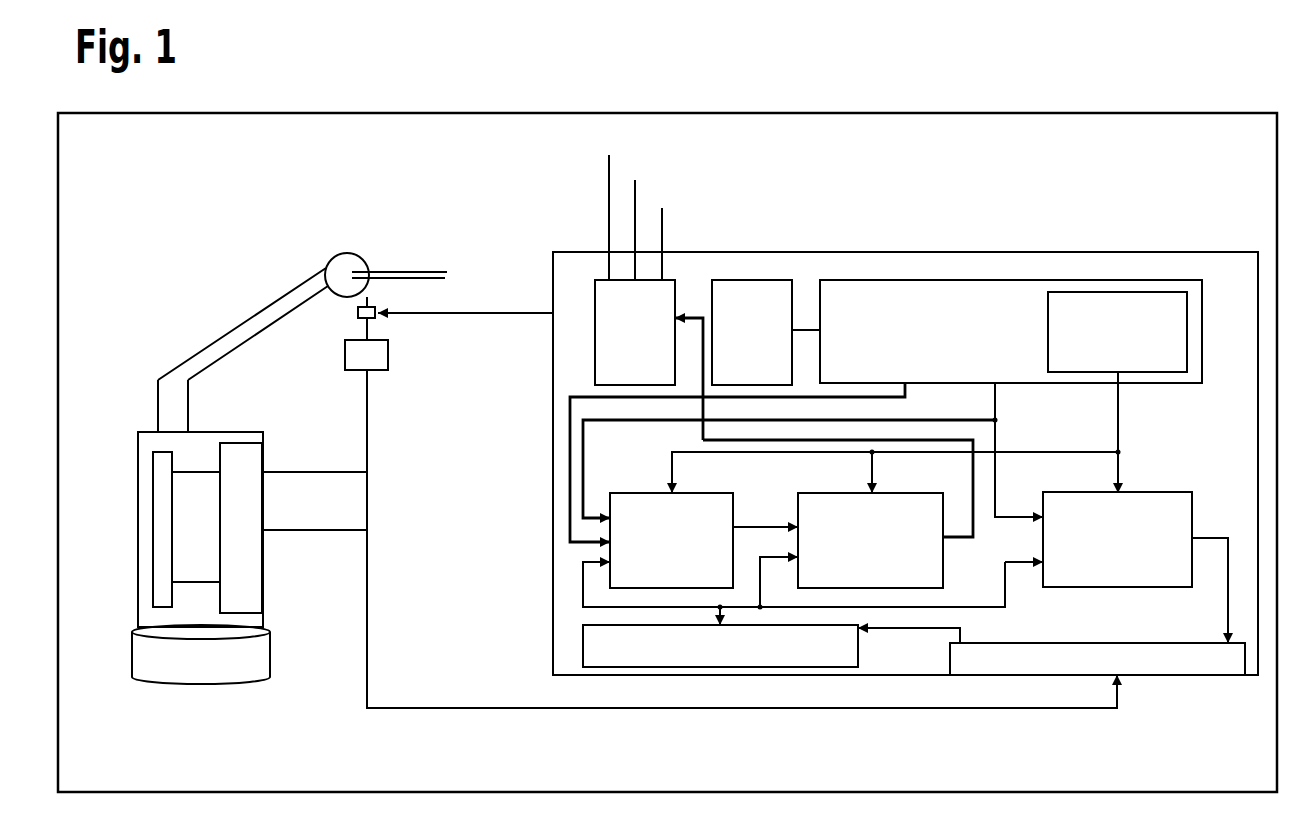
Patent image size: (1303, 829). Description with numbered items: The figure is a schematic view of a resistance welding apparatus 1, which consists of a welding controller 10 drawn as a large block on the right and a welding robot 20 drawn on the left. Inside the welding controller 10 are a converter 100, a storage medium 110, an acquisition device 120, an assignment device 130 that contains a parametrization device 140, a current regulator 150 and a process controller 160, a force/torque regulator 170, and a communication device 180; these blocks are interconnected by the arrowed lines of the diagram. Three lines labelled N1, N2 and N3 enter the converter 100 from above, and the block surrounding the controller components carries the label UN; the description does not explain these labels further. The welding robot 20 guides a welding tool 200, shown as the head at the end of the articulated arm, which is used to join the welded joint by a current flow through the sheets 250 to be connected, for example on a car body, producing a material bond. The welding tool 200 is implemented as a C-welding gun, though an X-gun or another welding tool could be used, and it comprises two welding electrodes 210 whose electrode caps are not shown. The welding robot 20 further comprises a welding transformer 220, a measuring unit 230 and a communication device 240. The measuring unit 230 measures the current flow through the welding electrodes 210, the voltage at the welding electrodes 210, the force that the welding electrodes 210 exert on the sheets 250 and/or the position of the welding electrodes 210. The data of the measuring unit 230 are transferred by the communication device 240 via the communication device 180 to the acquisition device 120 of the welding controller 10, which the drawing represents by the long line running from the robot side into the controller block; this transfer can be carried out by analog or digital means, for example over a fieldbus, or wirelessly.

The resistance welding apparatus 1 is at (1202, 114).
The welding controller 10 is at (1018, 252).
The welding robot 20 is at (286, 435).
The converter 100 is at (595, 300).
The storage medium 110 is at (753, 280).
The acquisition device 120 is at (773, 667).
The assignment device 130 is at (878, 280).
The parametrization device 140 is at (1120, 292).
The current regulator 150 is at (905, 588).
The process controller 160 is at (668, 588).
The force/torque regulator 170 is at (1143, 587).
The communication device 180 is at (1228, 677).
The welding tool 200 is at (327, 259).
The welding electrodes 210 is at (362, 262).
The welding transformer 220 is at (376, 318).
The measuring unit 230 is at (345, 355).
The communication device 240 is at (263, 588).
The sheets 250 is at (402, 272).
The first network N1 is at (609, 170).
The second network N2 is at (636, 182).
The third network N3 is at (663, 224).
The monitoring unit UN is at (553, 462).